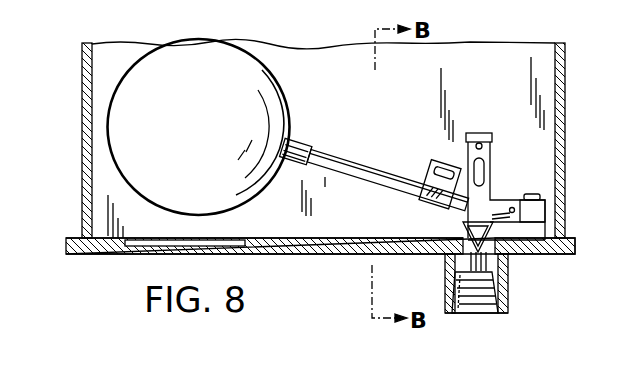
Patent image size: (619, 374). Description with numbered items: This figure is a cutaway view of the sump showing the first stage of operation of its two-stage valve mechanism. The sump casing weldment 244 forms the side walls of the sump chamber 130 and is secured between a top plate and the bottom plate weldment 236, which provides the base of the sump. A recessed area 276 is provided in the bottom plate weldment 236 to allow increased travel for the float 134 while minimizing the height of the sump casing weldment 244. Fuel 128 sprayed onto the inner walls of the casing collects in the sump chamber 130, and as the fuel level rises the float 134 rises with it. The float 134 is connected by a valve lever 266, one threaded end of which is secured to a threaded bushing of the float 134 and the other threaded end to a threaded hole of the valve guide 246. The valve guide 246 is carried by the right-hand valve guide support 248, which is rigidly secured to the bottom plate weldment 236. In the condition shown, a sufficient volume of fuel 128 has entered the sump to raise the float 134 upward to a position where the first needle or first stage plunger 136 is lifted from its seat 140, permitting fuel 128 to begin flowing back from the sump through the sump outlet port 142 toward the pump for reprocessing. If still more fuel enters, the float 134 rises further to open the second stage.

The fuel 128 is at (294, 41).
The sump chamber 130 is at (453, 52).
The float 134 is at (192, 62).
The first needle or first stage plunger 136 is at (463, 229).
The seat 140 is at (470, 257).
The sump outlet port 142 is at (483, 262).
The bottom plate weldment 236 is at (567, 240).
The sump casing weldment 244 is at (82, 126).
The valve guide 246 is at (438, 166).
The right-hand valve guide support 248 is at (490, 147).
The valve lever 266 is at (332, 156).
The recessed area 276 is at (223, 240).